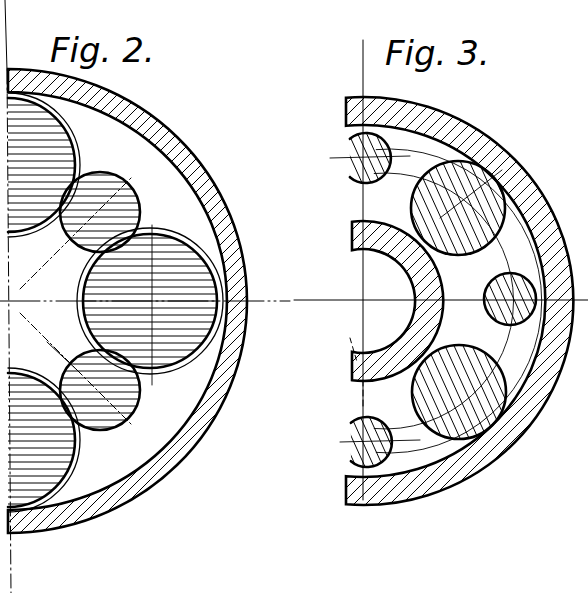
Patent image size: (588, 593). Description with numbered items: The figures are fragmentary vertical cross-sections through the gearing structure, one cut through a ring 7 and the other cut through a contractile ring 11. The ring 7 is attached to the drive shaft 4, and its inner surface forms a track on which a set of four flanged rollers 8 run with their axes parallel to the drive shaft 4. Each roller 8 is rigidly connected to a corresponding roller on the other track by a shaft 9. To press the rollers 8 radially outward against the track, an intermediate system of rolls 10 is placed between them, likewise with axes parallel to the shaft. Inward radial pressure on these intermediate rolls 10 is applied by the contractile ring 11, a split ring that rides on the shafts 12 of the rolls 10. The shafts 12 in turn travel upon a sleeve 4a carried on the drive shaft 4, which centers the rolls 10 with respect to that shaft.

In FIG. 2, the drive shaft 4 is at (62, 345).
In FIG. 3, the drive shaft 4 is at (372, 313).
In FIG. 3, the sleeve 4a is at (372, 365).
In FIG. 2, the ring 7 is at (130, 178).
In FIG. 2, the roller 8 is at (67, 145).
In FIG. 2, the shaft 9 is at (48, 380).
In FIG. 3, the shaft 9 is at (358, 170).
In FIG. 2, the intermediate roll 10 is at (116, 301).
In FIG. 3, the contractile ring 11 is at (540, 207).
In FIG. 2, the shaft of intermediate roll 12 is at (140, 218).
In FIG. 3, the shaft of intermediate roll 12 is at (500, 150).